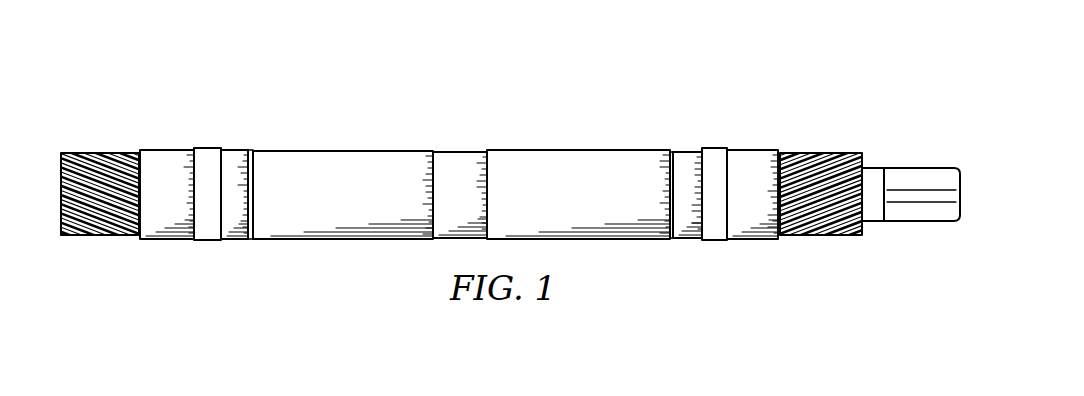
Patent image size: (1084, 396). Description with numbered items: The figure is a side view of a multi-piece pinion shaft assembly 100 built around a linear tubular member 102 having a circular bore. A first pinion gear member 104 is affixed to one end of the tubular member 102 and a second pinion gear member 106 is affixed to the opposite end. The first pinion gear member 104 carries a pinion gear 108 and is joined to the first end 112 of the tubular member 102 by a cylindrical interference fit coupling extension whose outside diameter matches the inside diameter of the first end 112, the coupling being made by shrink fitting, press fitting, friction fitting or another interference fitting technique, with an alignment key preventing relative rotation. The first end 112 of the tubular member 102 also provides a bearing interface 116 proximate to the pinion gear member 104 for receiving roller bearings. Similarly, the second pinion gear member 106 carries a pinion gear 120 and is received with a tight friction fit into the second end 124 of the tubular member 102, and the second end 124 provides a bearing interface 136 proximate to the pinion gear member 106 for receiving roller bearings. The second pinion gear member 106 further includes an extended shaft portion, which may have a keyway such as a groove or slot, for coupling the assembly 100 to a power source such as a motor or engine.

The multi-piece pinion shaft assembly 100 is at (727, 85).
The linear tubular member 102 is at (558, 150).
The first pinion gear member 104 is at (124, 113).
The second pinion gear member 106 is at (907, 143).
The pinion gear 108 is at (81, 152).
The first end 112 is at (170, 266).
The bearing interface 116 is at (170, 150).
The pinion gear 120 is at (828, 237).
The second end 124 is at (749, 276).
The bearing interface 136 is at (762, 150).